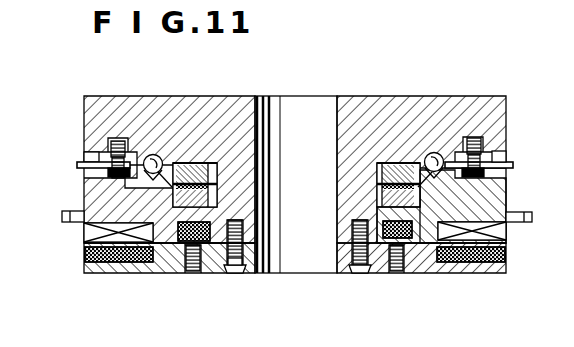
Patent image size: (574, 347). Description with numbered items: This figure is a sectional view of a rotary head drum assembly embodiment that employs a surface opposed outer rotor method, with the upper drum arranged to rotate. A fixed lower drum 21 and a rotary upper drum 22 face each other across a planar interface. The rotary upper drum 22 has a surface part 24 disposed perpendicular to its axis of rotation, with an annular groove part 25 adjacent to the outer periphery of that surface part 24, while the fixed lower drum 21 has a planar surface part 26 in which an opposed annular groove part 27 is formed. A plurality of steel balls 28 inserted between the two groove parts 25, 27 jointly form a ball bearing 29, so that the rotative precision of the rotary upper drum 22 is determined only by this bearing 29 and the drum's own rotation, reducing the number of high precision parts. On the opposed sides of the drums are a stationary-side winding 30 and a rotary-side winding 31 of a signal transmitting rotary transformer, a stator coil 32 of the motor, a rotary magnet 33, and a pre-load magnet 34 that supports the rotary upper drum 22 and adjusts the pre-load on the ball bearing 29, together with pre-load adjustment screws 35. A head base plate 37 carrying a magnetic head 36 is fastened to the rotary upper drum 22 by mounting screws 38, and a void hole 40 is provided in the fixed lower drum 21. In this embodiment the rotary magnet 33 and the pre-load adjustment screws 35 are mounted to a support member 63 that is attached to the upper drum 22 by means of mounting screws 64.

The fixed lower drum 21 is at (100, 205).
The rotary upper drum 22 is at (110, 113).
The surface part 24 is at (460, 164).
The annular groove part 25 is at (455, 160).
The planar surface part 26 is at (448, 172).
The annular groove part 27 is at (418, 177).
The steel balls 28 is at (432, 157).
The ball bearing 29 is at (167, 150).
The stationary-side winding 30 is at (245, 189).
The rotary-side winding 31 is at (201, 162).
The stator coil 32 is at (93, 233).
The rotary magnet 33 is at (115, 262).
The pre-load magnet 34 is at (174, 236).
The pre-load adjustment screws 35 is at (186, 271).
The magnetic head 36 is at (80, 153).
The head base plate 37 is at (90, 168).
The mounting screws 38 is at (110, 178).
The void hole 40 is at (305, 265).
The support member 63 is at (245, 274).
The mounting screws 64 is at (230, 272).